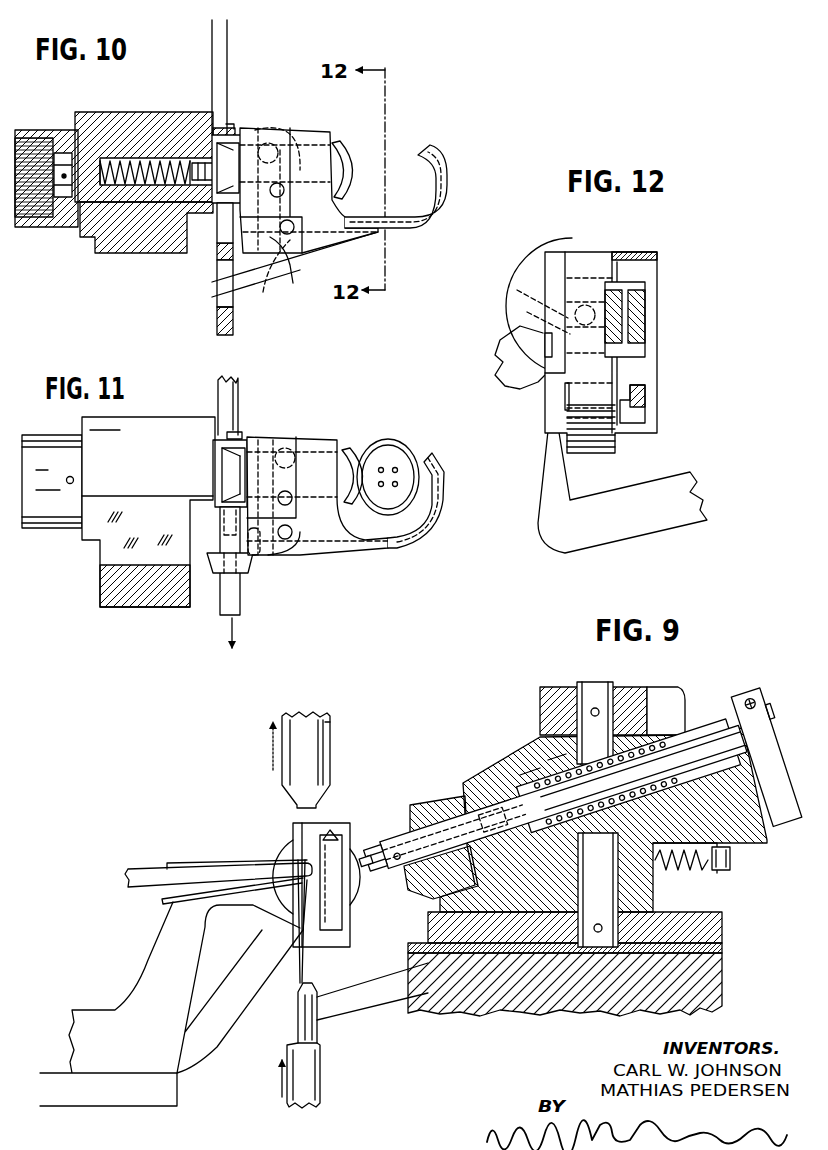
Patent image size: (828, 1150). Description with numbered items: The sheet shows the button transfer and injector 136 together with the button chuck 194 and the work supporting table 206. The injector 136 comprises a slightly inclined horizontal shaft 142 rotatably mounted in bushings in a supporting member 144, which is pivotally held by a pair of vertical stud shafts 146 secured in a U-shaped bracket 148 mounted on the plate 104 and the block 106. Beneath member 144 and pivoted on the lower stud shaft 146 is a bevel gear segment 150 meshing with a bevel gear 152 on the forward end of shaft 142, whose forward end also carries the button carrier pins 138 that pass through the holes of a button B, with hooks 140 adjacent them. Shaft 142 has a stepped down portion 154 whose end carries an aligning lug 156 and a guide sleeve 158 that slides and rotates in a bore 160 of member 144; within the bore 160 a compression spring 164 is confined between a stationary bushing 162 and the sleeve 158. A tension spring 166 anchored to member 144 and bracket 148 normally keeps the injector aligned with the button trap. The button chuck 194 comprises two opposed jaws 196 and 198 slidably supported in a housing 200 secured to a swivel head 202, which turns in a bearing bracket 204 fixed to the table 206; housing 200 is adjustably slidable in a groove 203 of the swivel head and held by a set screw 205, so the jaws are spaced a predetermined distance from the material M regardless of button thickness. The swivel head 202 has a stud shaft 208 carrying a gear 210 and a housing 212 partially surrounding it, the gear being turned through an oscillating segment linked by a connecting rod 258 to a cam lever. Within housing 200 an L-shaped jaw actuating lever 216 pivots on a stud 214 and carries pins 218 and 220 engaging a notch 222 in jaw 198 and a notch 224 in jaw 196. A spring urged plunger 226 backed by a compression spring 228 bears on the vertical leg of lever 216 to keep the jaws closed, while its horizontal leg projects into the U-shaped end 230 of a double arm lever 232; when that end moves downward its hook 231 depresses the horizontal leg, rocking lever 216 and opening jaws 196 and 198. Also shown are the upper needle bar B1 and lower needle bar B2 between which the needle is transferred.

In FIG. 9, the plate 104 is at (722, 949).
In FIG. 9, the block 106 is at (724, 990).
In FIG. 9, the button transfer and injector 136 is at (569, 790).
In FIG. 9, the button carrier pins 138 is at (372, 850).
In FIG. 9, the hooks 140 is at (366, 855).
In FIG. 9, the inclined horizontal shaft 142 is at (444, 833).
In FIG. 9, the supporting member 144 is at (525, 762).
In FIG. 9, the vertical stud shafts 146 is at (606, 692).
In FIG. 9, the U-shaped bracket 148 is at (553, 687).
In FIG. 9, the bevel gear segment 150 is at (442, 894).
In FIG. 9, the bevel gear 152 is at (418, 806).
In FIG. 9, the stepped down portion 154 is at (713, 733).
In FIG. 9, the aligning lug 156 is at (748, 698).
In FIG. 9, the guide sleeve 158 is at (684, 736).
In FIG. 9, the bore 160 is at (660, 740).
In FIG. 9, the stationary bushing 162 is at (528, 772).
In FIG. 9, the compression spring 164 is at (556, 757).
In FIG. 9, the tension spring 166 is at (706, 868).
In FIG. 10, the button chuck 194 is at (327, 204).
In FIG. 11, the button chuck 194 is at (363, 499).
In FIG. 9, the button chuck 194 is at (322, 820).
In FIG. 10, the jaw 196 is at (341, 152).
In FIG. 11, the jaw 196 is at (353, 453).
In FIG. 12, the jaw 196 is at (646, 319).
In FIG. 10, the jaw 198 is at (439, 208).
In FIG. 11, the jaw 198 is at (444, 500).
In FIG. 12, the jaw 198 is at (647, 406).
In FIG. 10, the housing 200 is at (325, 236).
In FIG. 11, the housing 200 is at (318, 550).
In FIG. 12, the housing 200 is at (583, 252).
In FIG. 10, the swivel head 202 is at (234, 196).
In FIG. 11, the swivel head 202 is at (241, 446).
In FIG. 10, the groove 203 is at (238, 130).
In FIG. 11, the groove 203 is at (221, 462).
In FIG. 10, the bearing bracket 204 is at (97, 254).
In FIG. 11, the bearing bracket 204 is at (148, 428).
In FIG. 12, the bearing bracket 204 is at (502, 362).
In FIG. 9, the bearing bracket 204 is at (207, 1037).
In FIG. 10, the set screw 205 is at (216, 128).
In FIG. 11, the set screw 205 is at (214, 494).
In FIG. 9, the work supporting table 206 is at (98, 988).
In FIG. 10, the stud shaft 208 is at (63, 198).
In FIG. 10, the gear 210 is at (22, 195).
In FIG. 10, the housing 212 is at (47, 178).
In FIG. 11, the housing 212 is at (49, 521).
In FIG. 10, the stud 214 is at (285, 188).
In FIG. 11, the stud 214 is at (292, 493).
In FIG. 12, the stud 214 is at (544, 341).
In FIG. 10, the L-shaped jaw actuating lever 216 is at (278, 284).
In FIG. 11, the L-shaped jaw actuating lever 216 is at (302, 552).
In FIG. 12, the L-shaped jaw actuating lever 216 is at (590, 453).
In FIG. 10, the pin 218 is at (289, 236).
In FIG. 11, the pin 218 is at (285, 540).
In FIG. 12, the pin 218 is at (562, 406).
In FIG. 10, the pin 220 is at (265, 143).
In FIG. 11, the pin 220 is at (292, 450).
In FIG. 12, the pin 220 is at (541, 259).
In FIG. 10, the notch 222 is at (262, 287).
In FIG. 10, the notch 224 is at (301, 136).
In FIG. 10, the spring urged plunger 226 is at (204, 162).
In FIG. 12, the spring urged plunger 226 is at (517, 291).
In FIG. 10, the compression spring 228 is at (143, 160).
In FIG. 10, the U-shaped end 230 is at (217, 332).
In FIG. 11, the U-shaped end 230 is at (226, 606).
In FIG. 12, the U-shaped end 230 is at (639, 530).
In FIG. 9, the U-shaped end 230 is at (346, 1000).
In FIG. 10, the hook 231 is at (220, 282).
In FIG. 11, the hook 231 is at (212, 553).
In FIG. 10, the double arm lever 232 is at (229, 63).
In FIG. 11, the double arm lever 232 is at (238, 388).
In FIG. 9, the connecting rod 258 is at (720, 830).
In FIG. 11, the button B is at (406, 448).
In FIG. 9, the button B is at (322, 842).
In FIG. 9, the upper needle bar B1 is at (331, 746).
In FIG. 9, the lower needle bar B2 is at (330, 1076).
In FIG. 9, the mandrel M is at (189, 861).